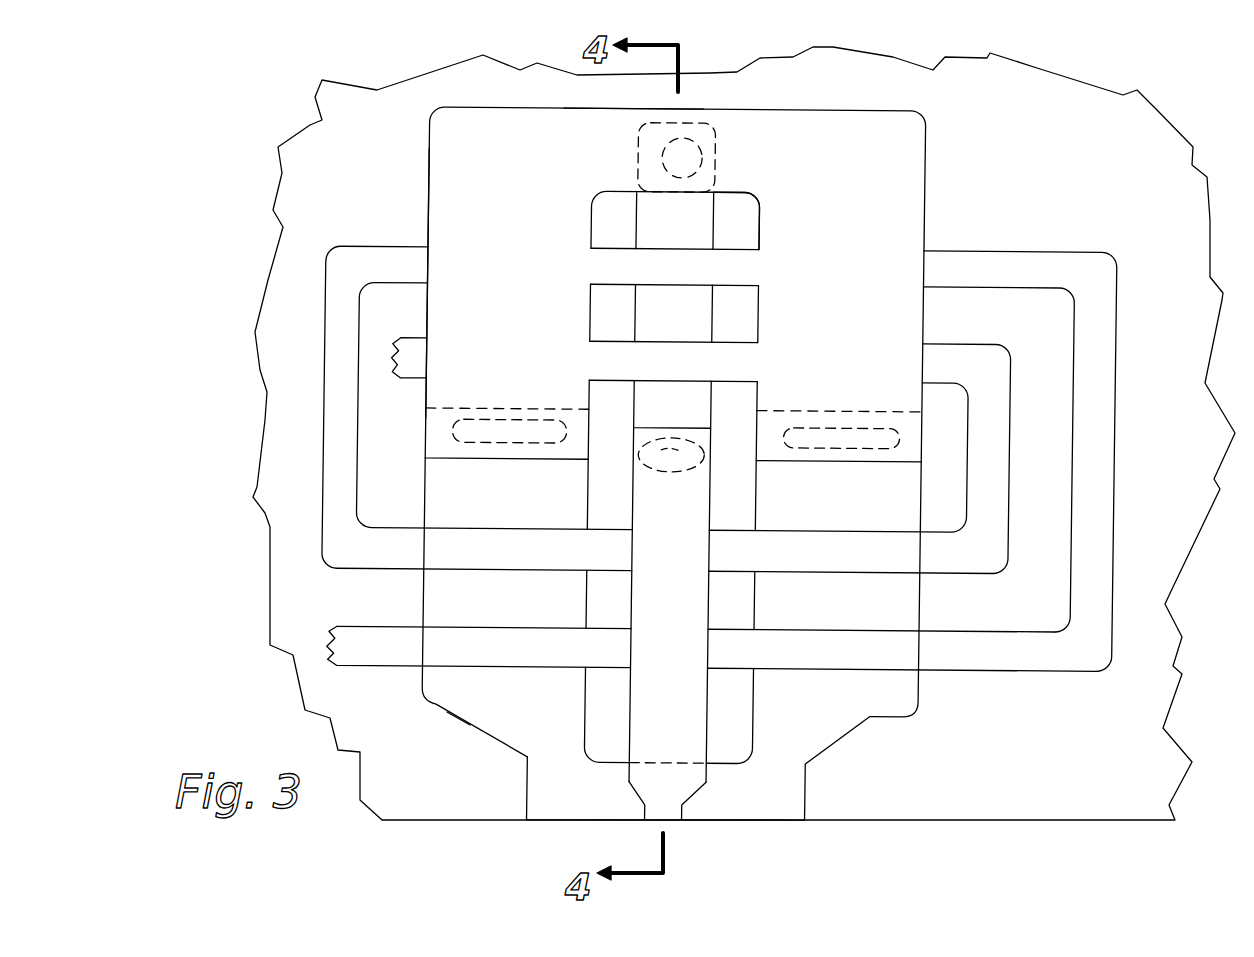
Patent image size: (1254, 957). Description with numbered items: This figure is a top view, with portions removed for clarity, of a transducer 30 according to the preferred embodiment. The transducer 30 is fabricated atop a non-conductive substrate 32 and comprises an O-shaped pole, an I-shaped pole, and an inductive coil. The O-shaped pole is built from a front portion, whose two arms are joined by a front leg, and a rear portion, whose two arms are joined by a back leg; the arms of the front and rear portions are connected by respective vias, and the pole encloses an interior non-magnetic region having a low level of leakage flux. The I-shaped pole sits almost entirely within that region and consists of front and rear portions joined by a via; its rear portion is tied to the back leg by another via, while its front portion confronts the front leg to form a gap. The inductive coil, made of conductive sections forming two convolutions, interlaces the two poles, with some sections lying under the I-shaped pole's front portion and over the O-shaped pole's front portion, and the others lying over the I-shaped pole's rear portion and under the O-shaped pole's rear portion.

The transducer 30 is at (462, 751).
The non-conductive substrate 32 is at (1178, 590).